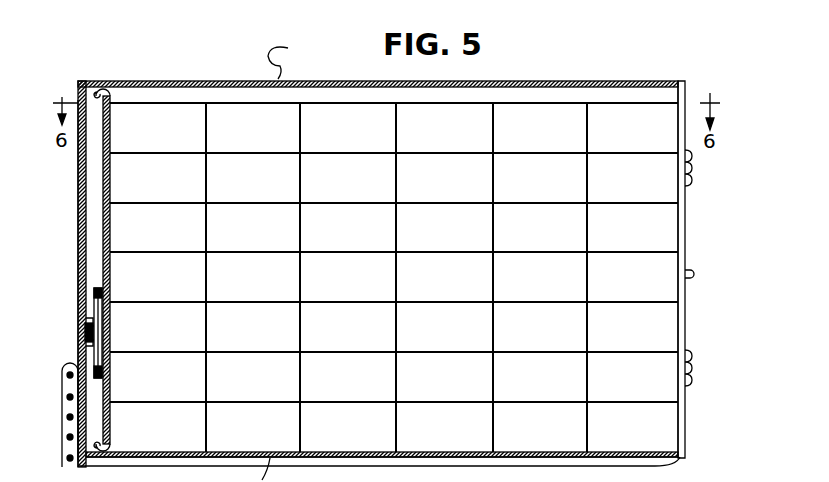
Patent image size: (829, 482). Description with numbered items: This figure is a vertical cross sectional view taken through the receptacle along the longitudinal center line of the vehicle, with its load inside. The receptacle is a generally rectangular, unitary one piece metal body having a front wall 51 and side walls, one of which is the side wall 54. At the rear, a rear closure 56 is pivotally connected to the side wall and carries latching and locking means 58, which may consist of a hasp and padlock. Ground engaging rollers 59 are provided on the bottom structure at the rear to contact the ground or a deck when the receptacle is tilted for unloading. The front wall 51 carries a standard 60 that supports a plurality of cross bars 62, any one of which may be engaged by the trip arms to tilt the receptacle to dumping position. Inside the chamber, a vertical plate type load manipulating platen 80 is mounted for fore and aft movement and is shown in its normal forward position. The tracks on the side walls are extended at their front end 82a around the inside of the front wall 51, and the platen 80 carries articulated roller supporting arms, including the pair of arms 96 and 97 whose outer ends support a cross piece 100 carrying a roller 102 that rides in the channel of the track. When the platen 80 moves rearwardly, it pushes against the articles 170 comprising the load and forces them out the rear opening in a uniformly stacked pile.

The side wall 54 is at (528, 84).
The front wall 51 is at (78, 233).
The rear closure 56 is at (682, 203).
The ground engaging rollers 59 is at (672, 461).
The load manipulating platen 80 is at (111, 233).
The articles 170 is at (643, 275).
The arm 96 is at (108, 296).
The cross piece 100 is at (106, 325).
The arm 97 is at (104, 372).
The roller 102 is at (80, 336).
The front end of track 82a is at (82, 318).
The standard 60 is at (68, 350).
The cross bars 62 is at (63, 453).
The latching and locking means 58 is at (557, 460).